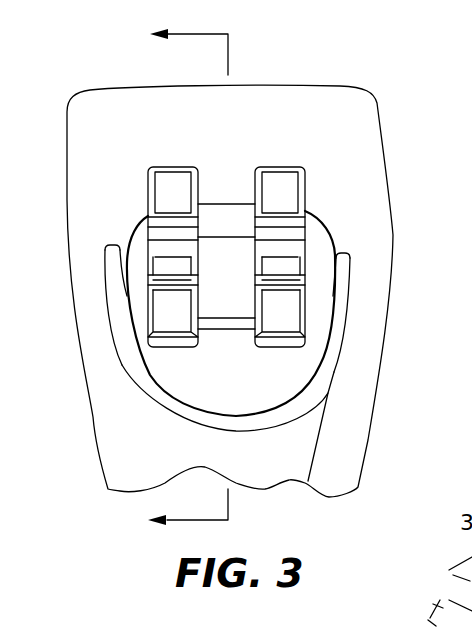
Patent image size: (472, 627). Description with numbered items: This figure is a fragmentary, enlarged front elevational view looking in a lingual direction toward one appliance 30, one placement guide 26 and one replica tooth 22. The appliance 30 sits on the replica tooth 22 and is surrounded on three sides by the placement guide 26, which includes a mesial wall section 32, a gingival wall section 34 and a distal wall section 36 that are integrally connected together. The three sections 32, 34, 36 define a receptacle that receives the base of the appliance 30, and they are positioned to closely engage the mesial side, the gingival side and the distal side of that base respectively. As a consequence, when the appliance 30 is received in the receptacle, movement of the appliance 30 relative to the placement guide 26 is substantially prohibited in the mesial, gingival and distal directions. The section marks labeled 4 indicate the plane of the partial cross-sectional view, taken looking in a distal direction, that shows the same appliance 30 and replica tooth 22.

The replica tooth 22 is at (369, 155).
The placement guide 26 is at (228, 363).
The appliance 30 is at (168, 166).
The mesial wall section 32 is at (338, 282).
The gingival wall section 34 is at (208, 433).
The distal wall section 36 is at (117, 307).
The section line 4- 4 is at (173, 281).